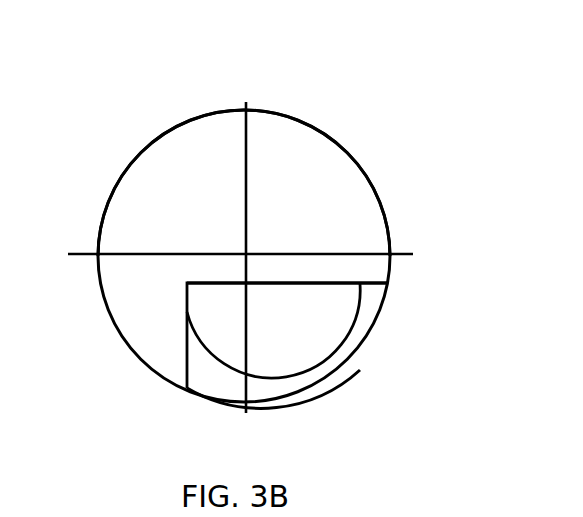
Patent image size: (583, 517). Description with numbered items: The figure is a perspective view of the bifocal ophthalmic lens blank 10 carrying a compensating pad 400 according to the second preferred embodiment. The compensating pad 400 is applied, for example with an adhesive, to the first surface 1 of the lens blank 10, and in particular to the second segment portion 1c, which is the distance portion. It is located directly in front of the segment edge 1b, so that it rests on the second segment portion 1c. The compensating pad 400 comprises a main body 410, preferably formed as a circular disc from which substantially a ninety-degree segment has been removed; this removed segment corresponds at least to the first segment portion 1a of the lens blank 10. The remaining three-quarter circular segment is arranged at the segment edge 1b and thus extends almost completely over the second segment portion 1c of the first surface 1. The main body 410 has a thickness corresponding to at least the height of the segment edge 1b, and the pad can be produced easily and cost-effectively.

The bifocal ophthalmic lens blank 10 is at (446, 85).
The compensating pad 400 is at (187, 150).
The main body 410 is at (122, 220).
The first surface 1 is at (205, 383).
The first segment portion 1a is at (318, 330).
The segment edge 1b is at (325, 282).
The second segment portion 1c is at (262, 388).